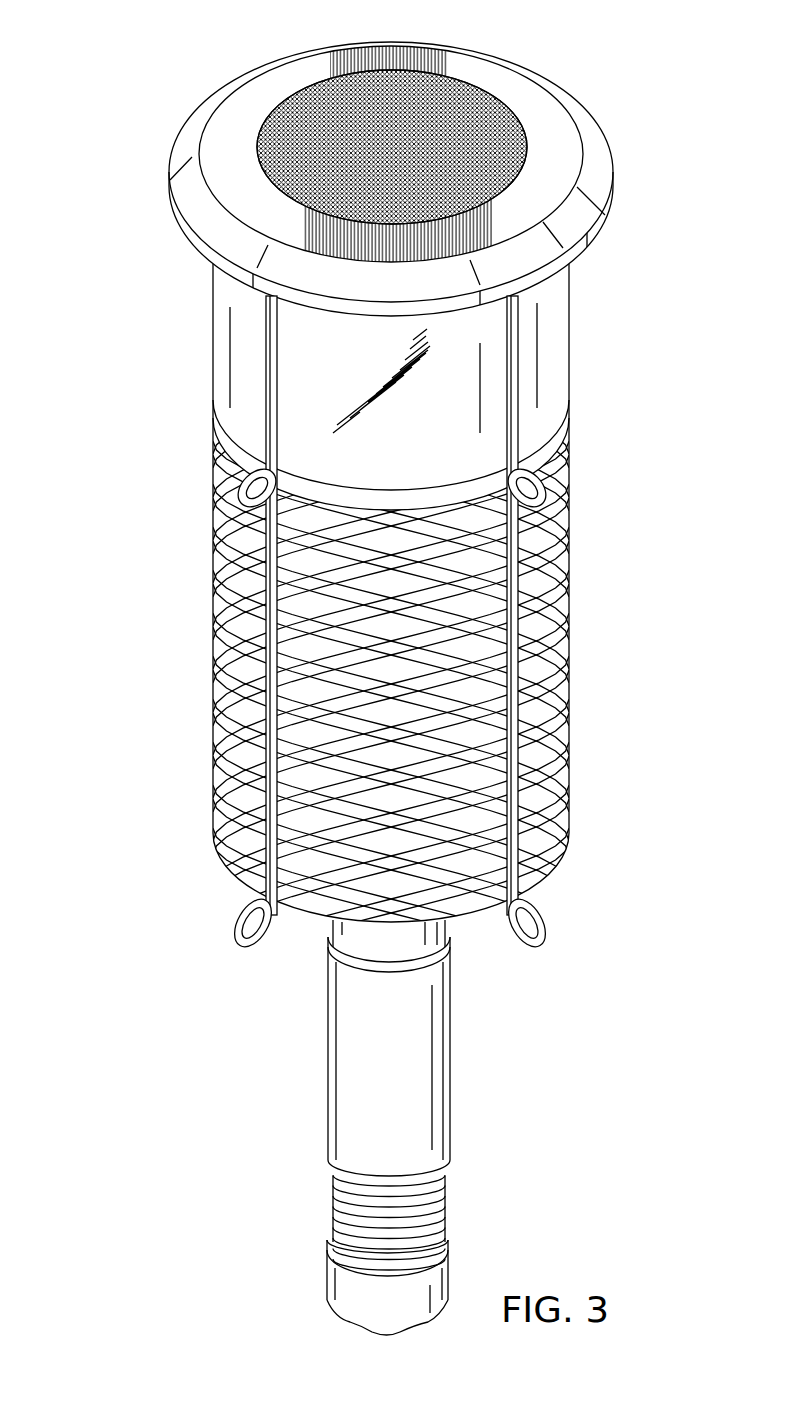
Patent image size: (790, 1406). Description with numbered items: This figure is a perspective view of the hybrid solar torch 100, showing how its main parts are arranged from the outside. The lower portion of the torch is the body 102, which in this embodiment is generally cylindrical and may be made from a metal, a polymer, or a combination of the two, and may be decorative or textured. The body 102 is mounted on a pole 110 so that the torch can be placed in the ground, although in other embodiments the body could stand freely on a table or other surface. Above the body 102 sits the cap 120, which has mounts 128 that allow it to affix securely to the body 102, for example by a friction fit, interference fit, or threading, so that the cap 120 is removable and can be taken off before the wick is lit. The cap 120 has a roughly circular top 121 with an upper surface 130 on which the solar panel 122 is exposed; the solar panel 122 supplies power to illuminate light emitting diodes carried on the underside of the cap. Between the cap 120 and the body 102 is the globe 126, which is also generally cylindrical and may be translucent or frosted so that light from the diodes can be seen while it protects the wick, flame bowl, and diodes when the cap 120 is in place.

The torch 100 is at (609, 50).
The body 102 is at (142, 418).
The pole 110 is at (328, 1078).
The cap 120 is at (142, 82).
The top 121 is at (592, 143).
The solar panel 122 is at (453, 77).
The globe 126 is at (406, 458).
The mounts 128 is at (230, 490).
The upper surface 130 is at (270, 82).